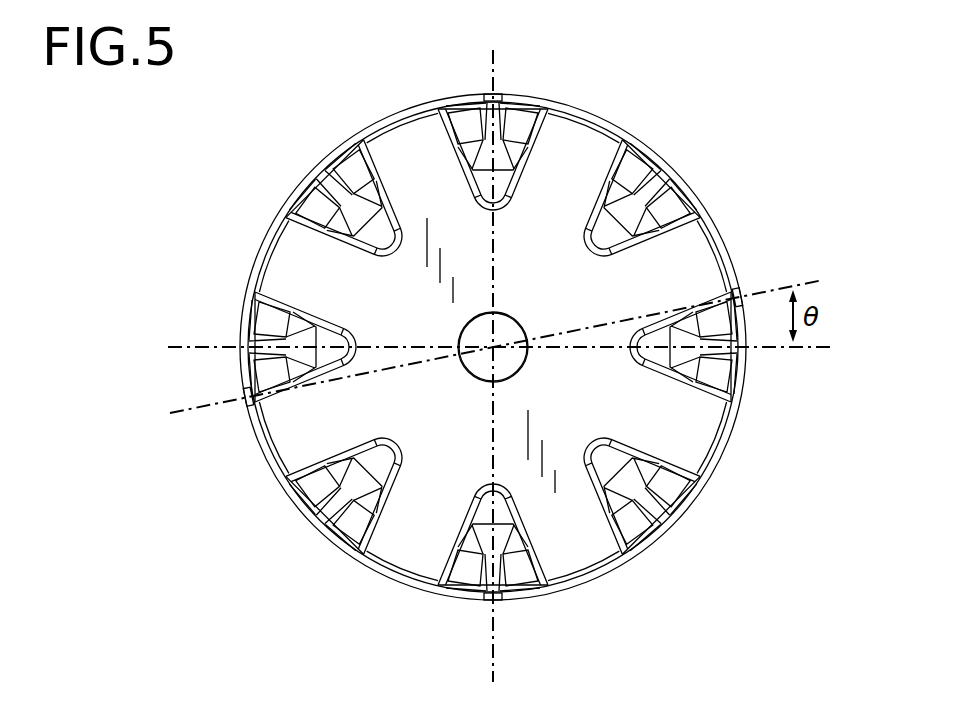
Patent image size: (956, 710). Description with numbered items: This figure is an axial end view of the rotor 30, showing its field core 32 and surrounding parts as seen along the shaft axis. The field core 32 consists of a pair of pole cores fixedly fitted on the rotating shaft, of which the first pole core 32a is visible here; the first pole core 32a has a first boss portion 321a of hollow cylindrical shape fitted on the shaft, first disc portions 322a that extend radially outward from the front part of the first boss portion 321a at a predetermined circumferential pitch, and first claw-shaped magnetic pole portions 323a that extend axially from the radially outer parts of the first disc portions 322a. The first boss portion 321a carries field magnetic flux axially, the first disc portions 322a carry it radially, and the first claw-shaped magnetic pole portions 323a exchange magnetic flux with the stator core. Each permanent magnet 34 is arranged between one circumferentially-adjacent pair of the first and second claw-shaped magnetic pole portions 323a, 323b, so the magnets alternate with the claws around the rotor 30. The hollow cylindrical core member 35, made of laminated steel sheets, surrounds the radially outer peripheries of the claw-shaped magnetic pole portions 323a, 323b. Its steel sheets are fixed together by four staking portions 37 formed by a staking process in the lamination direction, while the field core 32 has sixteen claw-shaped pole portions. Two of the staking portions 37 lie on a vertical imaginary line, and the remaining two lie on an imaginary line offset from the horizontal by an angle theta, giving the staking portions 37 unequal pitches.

The rotor 30 is at (310, 124).
The field core 32 is at (343, 303).
The first pole core 32a is at (322, 266).
The permanent magnets 34 is at (647, 513).
The core member 35 is at (652, 136).
The staking portions 37 is at (498, 93).
The first boss portion 321a is at (543, 392).
The first disc portions 322a is at (553, 513).
The first claw-shaped magnetic pole portions 323a is at (400, 128).
The second claw-shaped magnetic pole portions 323b is at (637, 197).